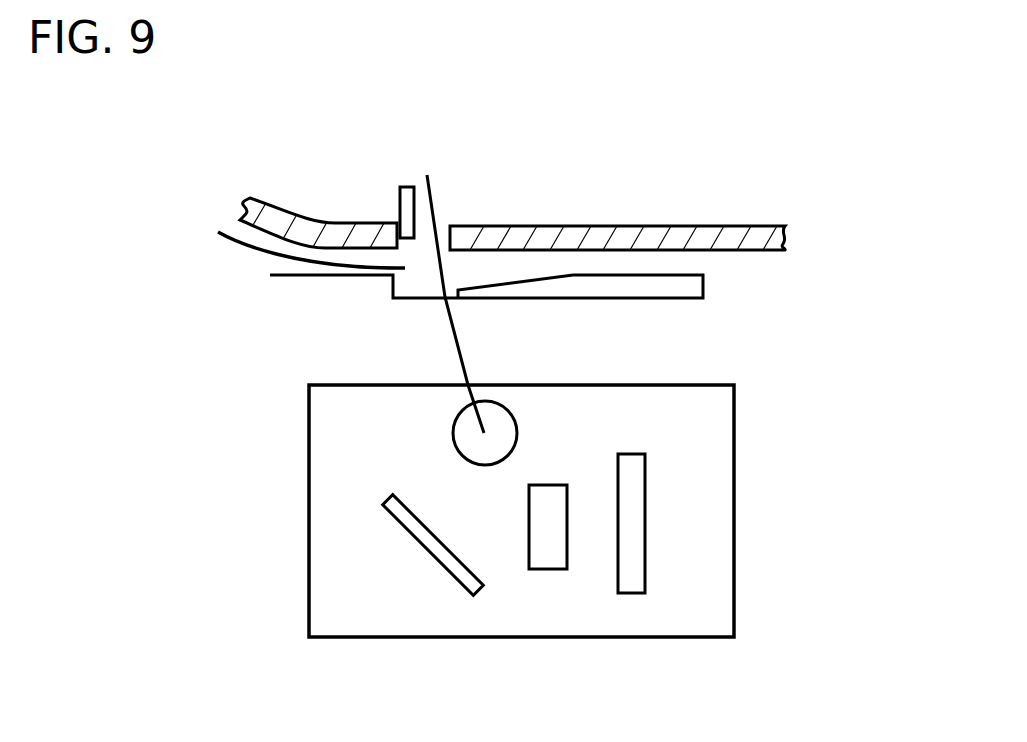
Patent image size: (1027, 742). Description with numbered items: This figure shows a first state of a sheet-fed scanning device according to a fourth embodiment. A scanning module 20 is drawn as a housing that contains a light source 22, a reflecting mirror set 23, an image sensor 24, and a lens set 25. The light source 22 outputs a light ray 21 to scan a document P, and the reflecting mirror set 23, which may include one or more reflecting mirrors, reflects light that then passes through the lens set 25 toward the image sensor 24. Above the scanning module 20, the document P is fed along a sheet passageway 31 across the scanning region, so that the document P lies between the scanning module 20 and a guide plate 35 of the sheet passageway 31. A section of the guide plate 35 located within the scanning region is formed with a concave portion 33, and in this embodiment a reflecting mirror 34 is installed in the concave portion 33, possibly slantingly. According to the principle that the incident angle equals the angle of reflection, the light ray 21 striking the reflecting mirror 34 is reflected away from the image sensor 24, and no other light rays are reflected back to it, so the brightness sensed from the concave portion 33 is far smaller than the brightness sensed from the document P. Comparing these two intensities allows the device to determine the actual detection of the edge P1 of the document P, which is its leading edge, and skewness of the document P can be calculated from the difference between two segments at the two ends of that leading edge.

The scanning module 20 is at (734, 603).
The light ray 21 is at (450, 353).
The light source 22 is at (460, 437).
The reflecting mirror set 23 is at (430, 545).
The image sensor 24 is at (641, 527).
The lens set 25 is at (548, 565).
The sheet passageway 31 is at (270, 202).
The concave portion 33 is at (435, 238).
The reflecting mirror 34 is at (400, 197).
The guide plate 35 is at (685, 230).
The document P is at (223, 235).
The edge of the document P1 is at (405, 272).